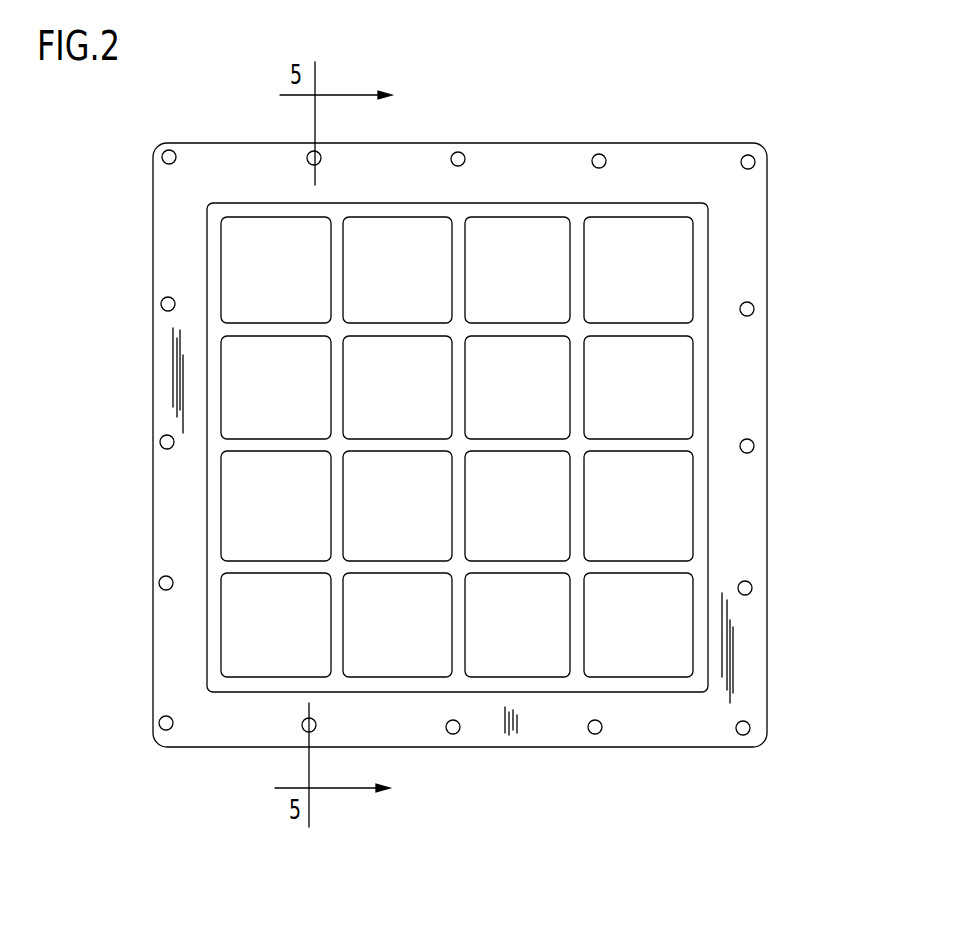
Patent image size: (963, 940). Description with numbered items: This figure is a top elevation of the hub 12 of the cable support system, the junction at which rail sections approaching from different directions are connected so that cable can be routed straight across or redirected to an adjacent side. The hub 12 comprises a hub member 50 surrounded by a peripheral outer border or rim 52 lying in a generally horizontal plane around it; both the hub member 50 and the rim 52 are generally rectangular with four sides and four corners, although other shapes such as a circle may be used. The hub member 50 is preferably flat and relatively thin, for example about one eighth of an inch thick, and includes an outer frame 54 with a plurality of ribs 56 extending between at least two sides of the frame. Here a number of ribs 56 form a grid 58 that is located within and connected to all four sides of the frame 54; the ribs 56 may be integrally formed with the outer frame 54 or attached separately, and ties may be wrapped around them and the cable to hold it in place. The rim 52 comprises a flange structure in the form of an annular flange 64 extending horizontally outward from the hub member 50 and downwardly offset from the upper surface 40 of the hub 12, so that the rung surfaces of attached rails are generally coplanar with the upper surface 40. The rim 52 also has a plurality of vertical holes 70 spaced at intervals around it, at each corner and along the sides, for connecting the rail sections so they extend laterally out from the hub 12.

The hub 12 is at (686, 127).
The upper surface 40 is at (742, 675).
The hub member 50 is at (693, 667).
The peripheral rim 52 is at (645, 753).
The outer frame 54 is at (703, 287).
The ribs 56 is at (422, 323).
The grid 58 is at (587, 280).
The annular flange 64 is at (403, 732).
The vertical holes 70 is at (592, 161).